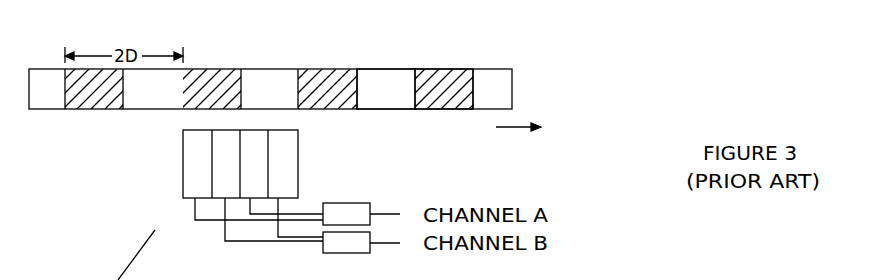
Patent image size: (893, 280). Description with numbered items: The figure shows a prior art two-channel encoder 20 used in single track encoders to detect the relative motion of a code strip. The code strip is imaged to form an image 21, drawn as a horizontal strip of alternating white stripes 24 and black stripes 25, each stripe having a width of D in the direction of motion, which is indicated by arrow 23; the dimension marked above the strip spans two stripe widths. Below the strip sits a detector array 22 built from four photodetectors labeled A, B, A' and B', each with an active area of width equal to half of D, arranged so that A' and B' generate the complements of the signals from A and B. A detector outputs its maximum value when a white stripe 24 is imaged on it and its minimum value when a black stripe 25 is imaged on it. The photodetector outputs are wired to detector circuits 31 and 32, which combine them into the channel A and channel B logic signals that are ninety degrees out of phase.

The two-channel encoder 20 is at (602, 79).
The image of the code strip 21 is at (52, 109).
The detector array 22 is at (183, 162).
The arrow 23 is at (498, 128).
The white stripe 24 is at (380, 110).
The black stripe 25 is at (447, 110).
The detector circuit 31 is at (352, 203).
The detector circuit 32 is at (345, 253).